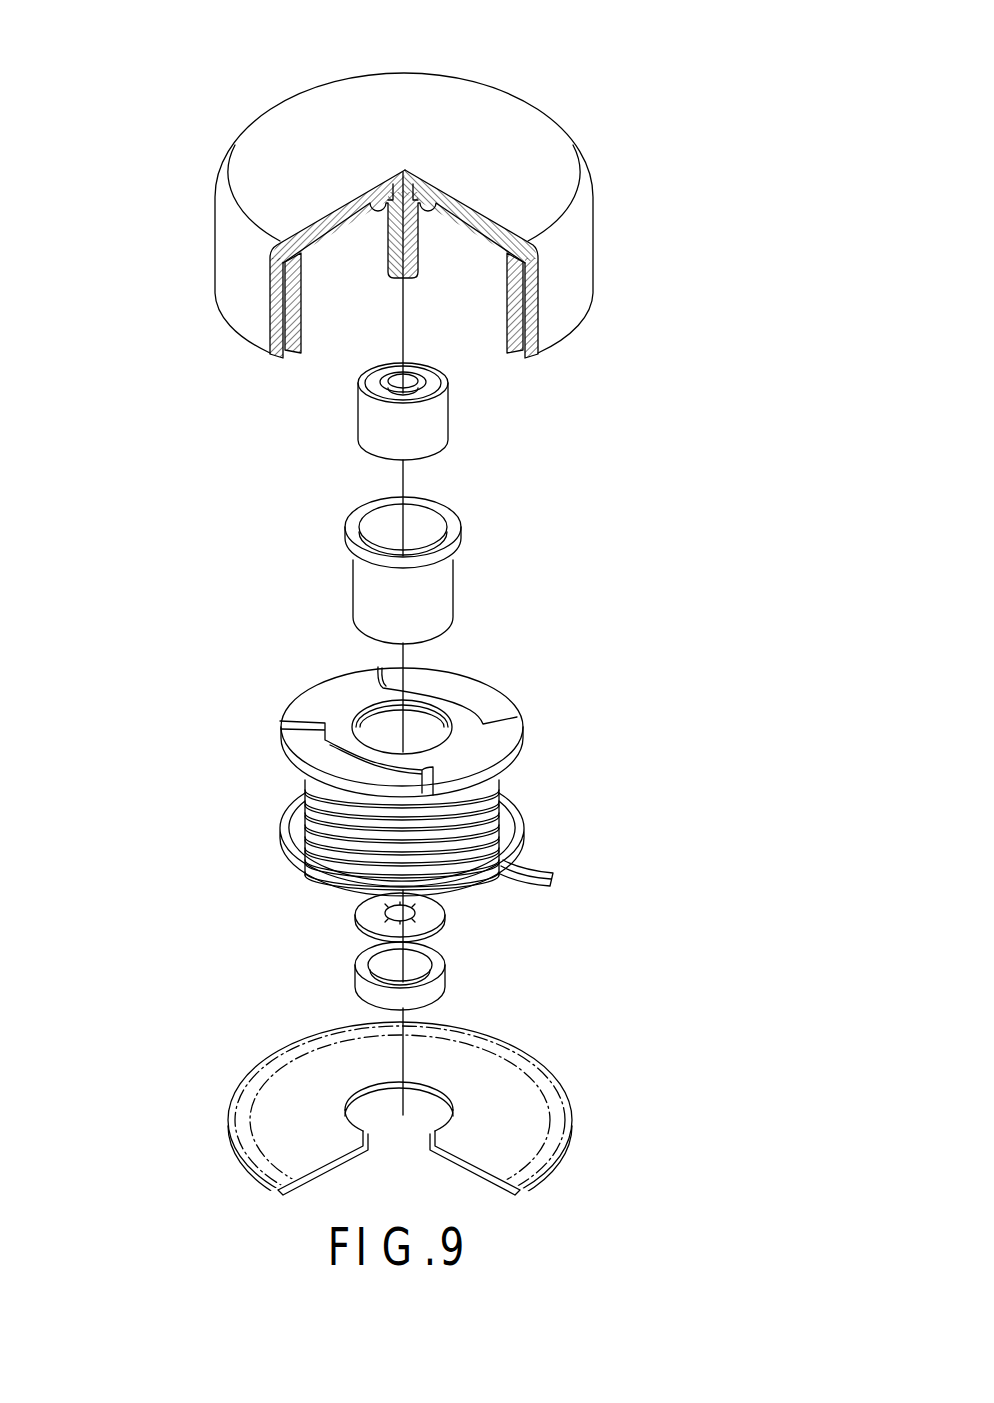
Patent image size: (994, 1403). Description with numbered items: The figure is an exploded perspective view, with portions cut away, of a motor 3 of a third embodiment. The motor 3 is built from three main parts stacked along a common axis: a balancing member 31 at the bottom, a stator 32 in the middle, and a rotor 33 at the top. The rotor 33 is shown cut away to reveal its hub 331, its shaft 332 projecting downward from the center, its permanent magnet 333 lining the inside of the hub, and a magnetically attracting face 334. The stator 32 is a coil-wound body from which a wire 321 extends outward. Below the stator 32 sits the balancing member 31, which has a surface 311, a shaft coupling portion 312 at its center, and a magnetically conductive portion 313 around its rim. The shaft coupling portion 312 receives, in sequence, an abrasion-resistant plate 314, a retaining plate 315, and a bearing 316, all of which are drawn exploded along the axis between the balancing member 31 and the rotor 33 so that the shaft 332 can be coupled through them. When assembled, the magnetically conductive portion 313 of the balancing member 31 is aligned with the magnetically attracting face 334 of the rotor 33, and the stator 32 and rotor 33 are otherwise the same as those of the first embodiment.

The motor 3 is at (195, 172).
The rotor 33 is at (538, 125).
The hub 331 is at (558, 312).
The shaft 332 is at (420, 250).
The permanent magnet 333 is at (276, 306).
The magnetically attracting face 334 is at (292, 348).
The bearing 316 is at (440, 422).
The shaft coupling portion 312 is at (447, 590).
The stator 32 is at (505, 743).
The wire 321 is at (540, 872).
The retaining plate 315 is at (447, 910).
The abrasion-resistant plate 314 is at (435, 988).
The balancing member 31 is at (245, 1052).
The surface 311 is at (310, 1082).
The magnetically conductive portion 313 is at (243, 1117).